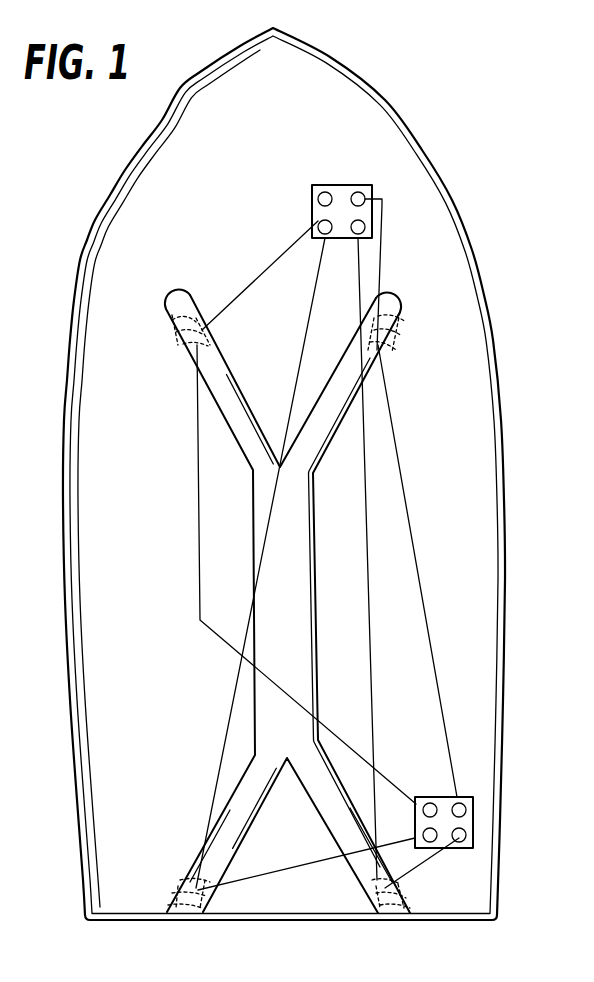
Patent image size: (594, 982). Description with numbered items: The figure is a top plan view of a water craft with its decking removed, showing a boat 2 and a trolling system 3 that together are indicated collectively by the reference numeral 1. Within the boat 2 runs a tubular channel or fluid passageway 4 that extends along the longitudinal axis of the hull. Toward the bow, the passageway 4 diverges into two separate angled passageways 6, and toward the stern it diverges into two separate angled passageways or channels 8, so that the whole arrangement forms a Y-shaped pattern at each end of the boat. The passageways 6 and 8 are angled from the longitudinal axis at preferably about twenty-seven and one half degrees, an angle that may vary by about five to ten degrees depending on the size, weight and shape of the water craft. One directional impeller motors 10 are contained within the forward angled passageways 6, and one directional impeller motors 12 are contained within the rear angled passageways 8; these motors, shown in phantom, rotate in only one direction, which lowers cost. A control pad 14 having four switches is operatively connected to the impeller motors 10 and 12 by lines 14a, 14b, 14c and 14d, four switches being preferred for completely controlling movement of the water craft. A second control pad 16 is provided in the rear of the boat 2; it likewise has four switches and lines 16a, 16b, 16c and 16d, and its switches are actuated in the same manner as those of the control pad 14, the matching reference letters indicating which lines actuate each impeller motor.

The boat and trolling system 1 is at (456, 122).
The boat 2 is at (494, 340).
The trolling system 3 is at (290, 601).
The tubular channel or fluid passageway 4 is at (318, 567).
The angled passageways 6 is at (178, 340).
The angled passageways or channels 8 is at (227, 803).
The one directional impeller motors 10 is at (185, 362).
The one directional impeller motors 12 is at (207, 877).
The control pad 14 is at (317, 184).
The line 14a is at (251, 282).
The line 14b is at (383, 256).
The line 14c is at (308, 303).
The line 14d is at (360, 283).
The second control pad 16 is at (436, 795).
The line 16a is at (198, 548).
The line 16b is at (424, 601).
The line 16c is at (310, 862).
The line 16d is at (428, 850).